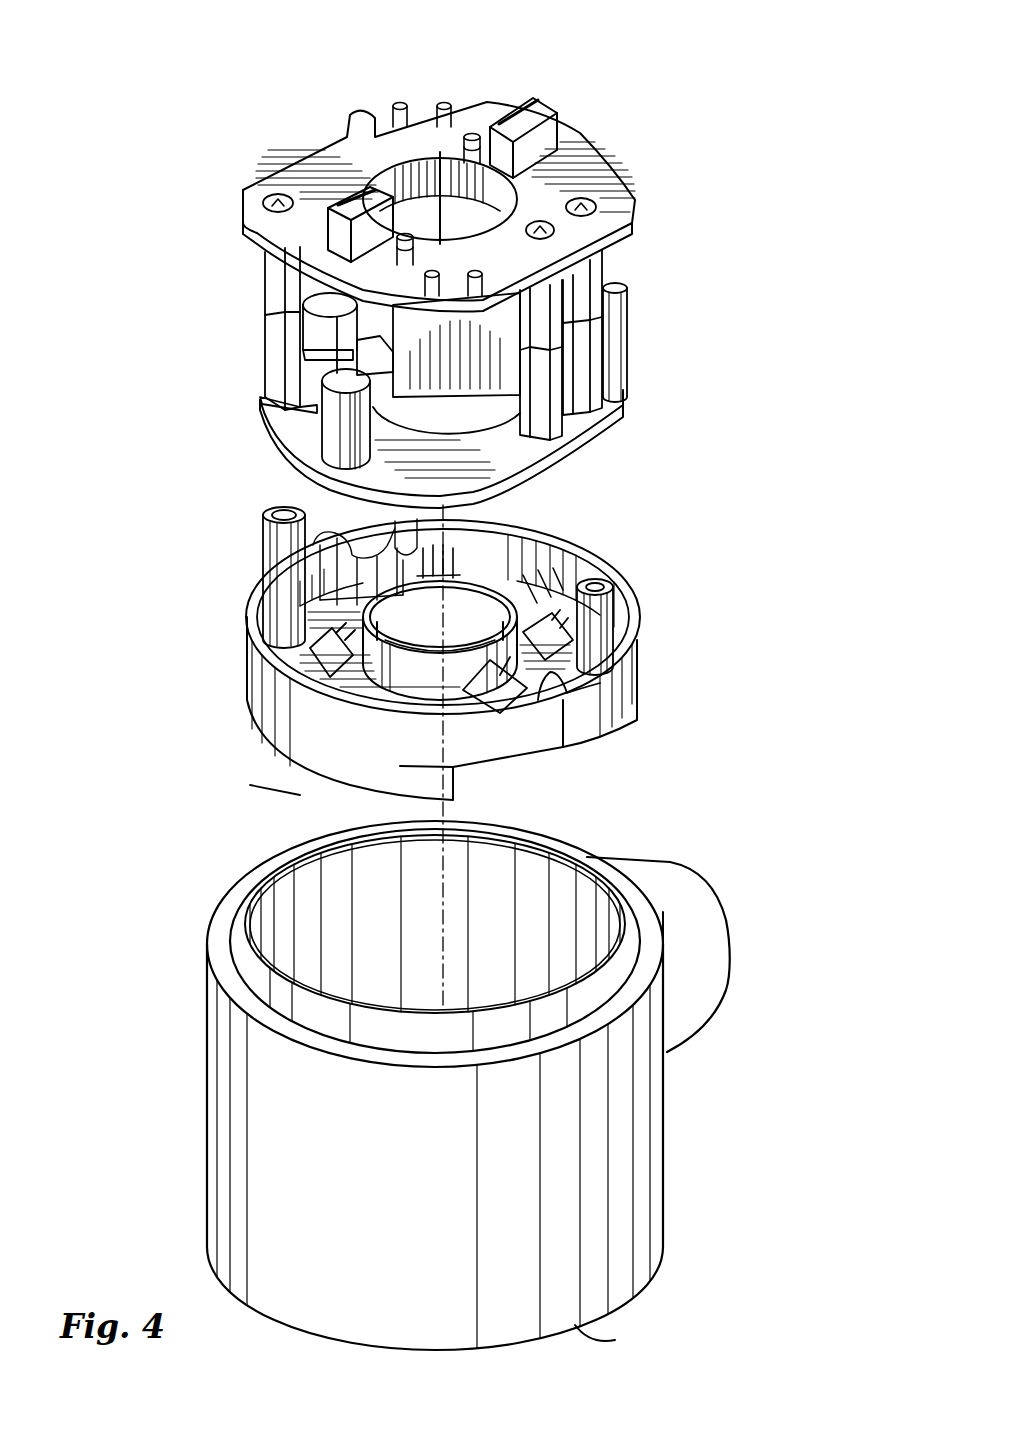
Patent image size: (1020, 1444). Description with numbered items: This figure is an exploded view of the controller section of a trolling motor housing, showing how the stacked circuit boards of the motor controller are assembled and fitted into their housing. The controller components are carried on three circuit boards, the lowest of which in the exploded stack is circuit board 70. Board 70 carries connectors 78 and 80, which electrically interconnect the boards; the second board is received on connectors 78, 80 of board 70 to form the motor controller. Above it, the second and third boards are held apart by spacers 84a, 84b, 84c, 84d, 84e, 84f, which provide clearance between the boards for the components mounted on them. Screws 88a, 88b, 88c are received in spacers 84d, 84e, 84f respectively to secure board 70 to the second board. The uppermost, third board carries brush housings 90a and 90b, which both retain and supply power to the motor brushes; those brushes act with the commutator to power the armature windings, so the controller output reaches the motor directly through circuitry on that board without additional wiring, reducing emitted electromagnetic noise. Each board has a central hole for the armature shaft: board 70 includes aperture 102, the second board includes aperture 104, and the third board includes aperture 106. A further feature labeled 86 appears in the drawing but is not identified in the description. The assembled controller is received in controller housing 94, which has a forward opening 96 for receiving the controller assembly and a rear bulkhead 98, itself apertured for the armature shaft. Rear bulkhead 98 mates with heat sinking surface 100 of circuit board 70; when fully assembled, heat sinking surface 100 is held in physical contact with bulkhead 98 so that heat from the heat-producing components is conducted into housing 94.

The circuit board 70 is at (262, 641).
The connector 78 is at (455, 552).
The connector 80 is at (550, 573).
The spacer 84a is at (280, 347).
The spacer 84b is at (550, 413).
The spacer 84c is at (593, 365).
The spacer 84d is at (280, 285).
The spacer 84e is at (553, 307).
The spacer 84f is at (593, 258).
The outer rim 86 is at (640, 652).
The screw 88a is at (275, 198).
The screw 88b is at (542, 223).
The screw 88c is at (592, 205).
The brush housing 90a is at (332, 229).
The brush housing 90b is at (506, 100).
The controller housing 94 is at (665, 1122).
The forward opening 96 is at (523, 872).
The rear bulkhead 98 is at (615, 1340).
The heat sinking surface 100 is at (303, 787).
The aperture 102 is at (458, 627).
The aperture 104 is at (463, 431).
The aperture 106 is at (457, 219).